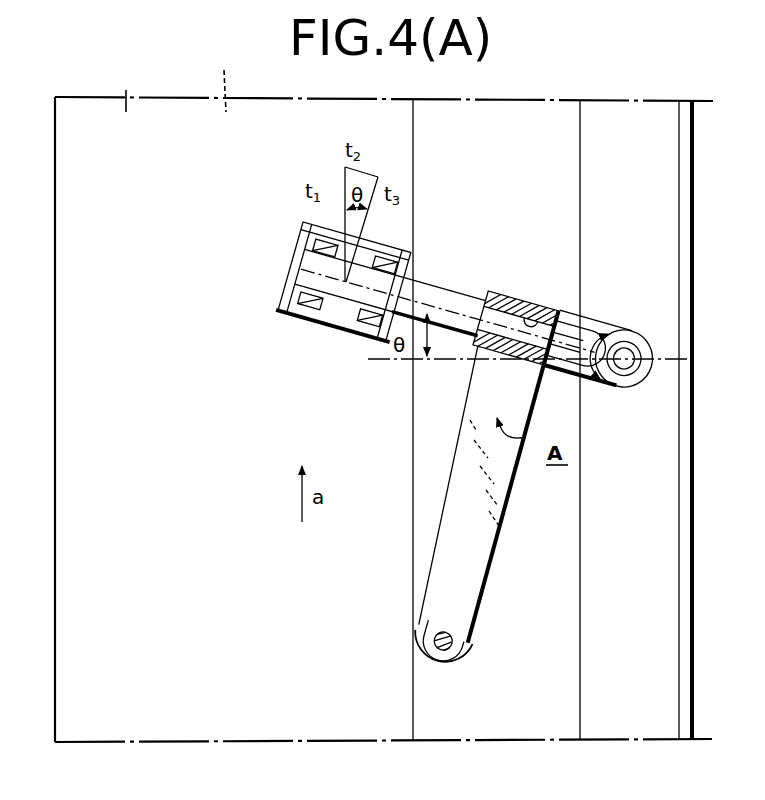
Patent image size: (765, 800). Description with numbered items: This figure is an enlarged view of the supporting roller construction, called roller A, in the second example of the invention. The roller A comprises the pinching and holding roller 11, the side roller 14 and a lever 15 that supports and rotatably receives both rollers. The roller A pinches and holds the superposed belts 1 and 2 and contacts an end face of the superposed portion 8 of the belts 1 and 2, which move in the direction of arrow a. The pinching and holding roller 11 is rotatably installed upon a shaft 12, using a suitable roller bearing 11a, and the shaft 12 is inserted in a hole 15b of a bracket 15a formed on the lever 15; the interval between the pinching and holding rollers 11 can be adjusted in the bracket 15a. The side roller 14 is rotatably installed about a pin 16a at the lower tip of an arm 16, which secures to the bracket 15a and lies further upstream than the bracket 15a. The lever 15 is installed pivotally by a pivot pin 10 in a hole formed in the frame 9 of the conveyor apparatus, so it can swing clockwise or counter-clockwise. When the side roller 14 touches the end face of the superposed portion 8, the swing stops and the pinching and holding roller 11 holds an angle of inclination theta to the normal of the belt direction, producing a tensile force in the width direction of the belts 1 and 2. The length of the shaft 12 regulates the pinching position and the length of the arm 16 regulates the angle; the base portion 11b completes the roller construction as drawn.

The belt 1 is at (126, 88).
The belt 2 is at (219, 79).
The superposed portion 8 is at (401, 401).
The frame 9 is at (698, 159).
The pivot pin 10 is at (632, 332).
The pinching and holding roller 11 is at (300, 223).
The roller bearing 11a is at (388, 262).
The carriage base plate 11b is at (285, 318).
The shaft 12 is at (458, 292).
The side roller 14 is at (459, 670).
The lever 15 is at (593, 322).
The bracket 15a is at (507, 297).
The hole 15b is at (534, 313).
The arm 16 is at (503, 532).
The pin 16a is at (474, 642).